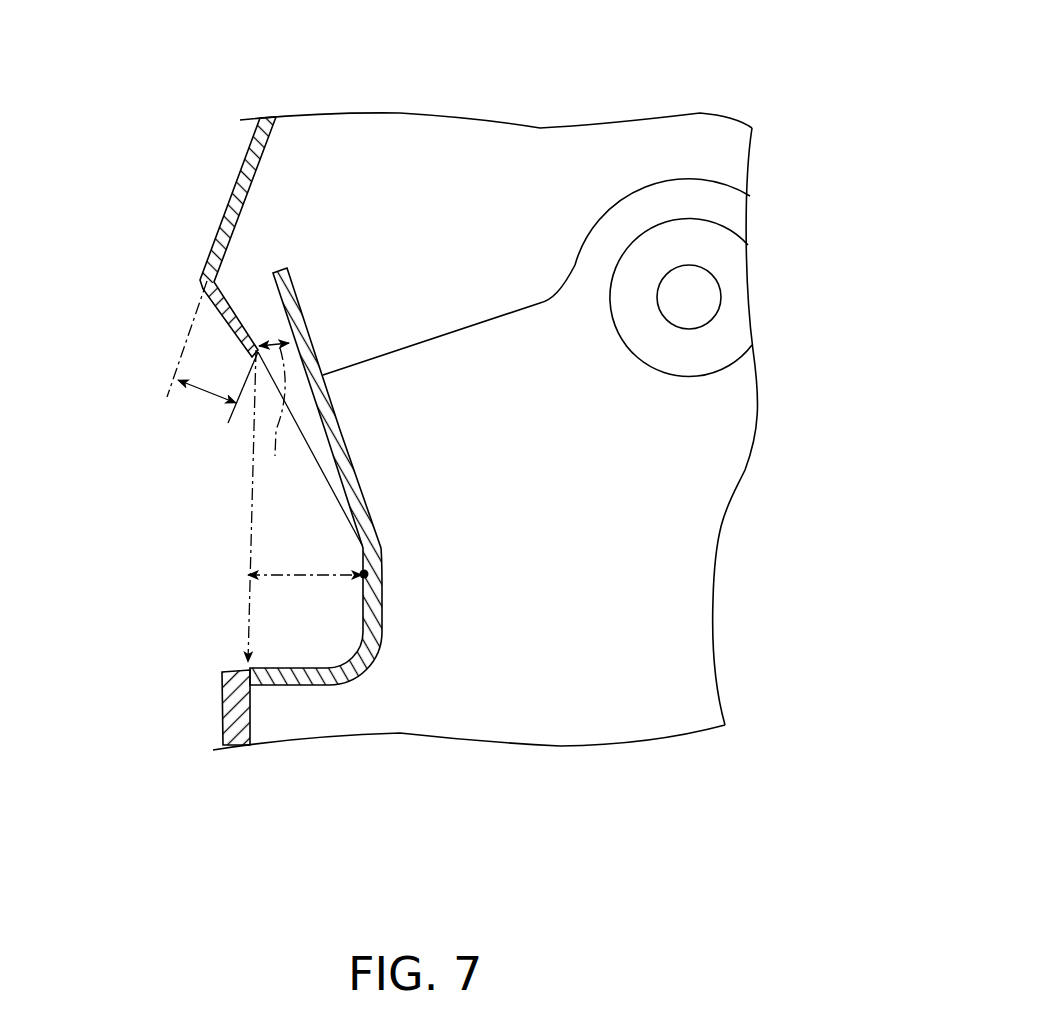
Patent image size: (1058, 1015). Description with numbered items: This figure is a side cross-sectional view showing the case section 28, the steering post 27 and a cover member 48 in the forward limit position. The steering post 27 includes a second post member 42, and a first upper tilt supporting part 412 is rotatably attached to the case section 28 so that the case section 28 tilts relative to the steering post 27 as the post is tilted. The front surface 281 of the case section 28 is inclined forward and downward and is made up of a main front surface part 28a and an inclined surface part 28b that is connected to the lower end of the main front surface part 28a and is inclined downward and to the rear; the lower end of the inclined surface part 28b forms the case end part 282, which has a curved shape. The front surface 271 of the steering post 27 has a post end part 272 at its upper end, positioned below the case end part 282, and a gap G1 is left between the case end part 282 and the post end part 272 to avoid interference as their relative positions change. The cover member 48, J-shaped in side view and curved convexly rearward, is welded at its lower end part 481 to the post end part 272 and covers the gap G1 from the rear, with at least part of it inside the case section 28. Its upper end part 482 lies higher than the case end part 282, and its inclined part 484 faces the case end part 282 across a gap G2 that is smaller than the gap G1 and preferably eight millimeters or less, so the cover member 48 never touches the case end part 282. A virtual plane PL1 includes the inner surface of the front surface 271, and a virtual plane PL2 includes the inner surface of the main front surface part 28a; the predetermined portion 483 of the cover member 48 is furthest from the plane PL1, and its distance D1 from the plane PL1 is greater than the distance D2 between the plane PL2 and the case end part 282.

The steering post 27 is at (215, 695).
The front surface of the steering post 271 is at (218, 725).
The post end part 272 is at (230, 668).
The case section 28 is at (195, 180).
The main front surface part 28a is at (240, 160).
The inclined surface part 28b is at (226, 322).
The front surface of the case section 281 is at (213, 235).
The case end part 282 is at (248, 358).
The second post member 42 is at (513, 713).
The first upper tilt supporting part 412 is at (713, 250).
The cover member 48 is at (383, 590).
The lower end part of the cover member 481 is at (248, 668).
The upper end part of the cover member 482 is at (279, 264).
The predetermined portion 483 is at (382, 570).
The inclined part 484 is at (311, 338).
The distance D1 is at (308, 565).
The distance D2 is at (204, 391).
The gap G1 is at (253, 482).
The gap G2 is at (284, 417).
The virtual plane PL1 is at (247, 598).
The virtual plane PL2 is at (176, 362).